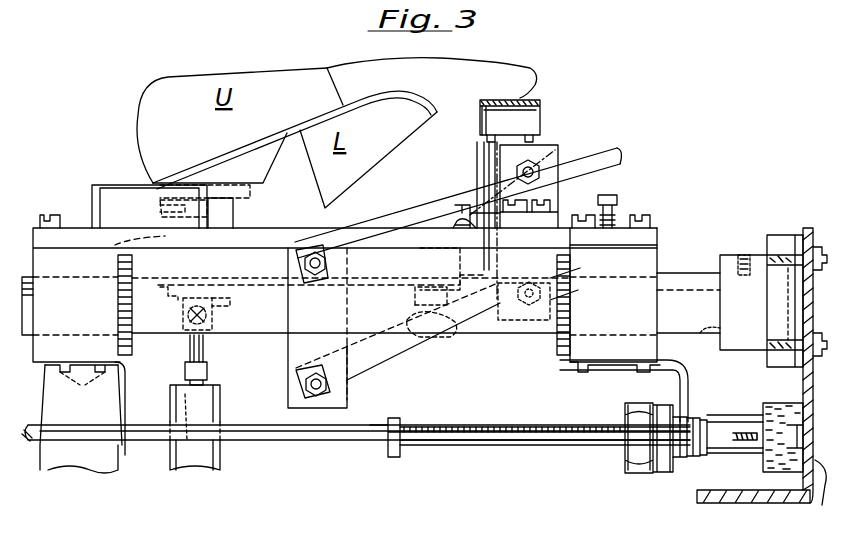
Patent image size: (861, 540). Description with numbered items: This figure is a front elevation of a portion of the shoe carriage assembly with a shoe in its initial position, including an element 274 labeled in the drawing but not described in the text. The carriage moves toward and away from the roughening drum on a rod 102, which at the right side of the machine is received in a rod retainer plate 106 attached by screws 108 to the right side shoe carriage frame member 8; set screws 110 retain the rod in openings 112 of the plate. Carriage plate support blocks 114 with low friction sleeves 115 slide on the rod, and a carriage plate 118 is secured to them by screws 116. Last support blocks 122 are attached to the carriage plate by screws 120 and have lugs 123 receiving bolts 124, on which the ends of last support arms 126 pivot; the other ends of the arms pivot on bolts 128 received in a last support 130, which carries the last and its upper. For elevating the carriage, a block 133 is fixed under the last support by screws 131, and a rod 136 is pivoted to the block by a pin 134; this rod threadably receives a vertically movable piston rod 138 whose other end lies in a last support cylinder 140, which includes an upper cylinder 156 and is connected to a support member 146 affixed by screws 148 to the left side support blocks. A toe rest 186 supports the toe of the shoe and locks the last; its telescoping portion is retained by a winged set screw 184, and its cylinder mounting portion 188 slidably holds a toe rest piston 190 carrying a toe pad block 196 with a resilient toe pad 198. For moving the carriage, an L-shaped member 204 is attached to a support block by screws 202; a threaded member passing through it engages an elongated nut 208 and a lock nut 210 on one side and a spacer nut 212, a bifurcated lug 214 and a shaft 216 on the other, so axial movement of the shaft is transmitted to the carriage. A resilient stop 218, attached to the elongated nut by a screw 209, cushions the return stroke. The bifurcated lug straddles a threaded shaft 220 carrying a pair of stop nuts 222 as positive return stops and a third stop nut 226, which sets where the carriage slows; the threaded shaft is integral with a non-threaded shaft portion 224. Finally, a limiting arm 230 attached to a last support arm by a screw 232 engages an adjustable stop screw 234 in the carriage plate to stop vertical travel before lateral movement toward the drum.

The right side shoe carriage frame member 8 is at (822, 505).
The rod 102 is at (700, 280).
The rod retainer plate 106 is at (779, 247).
The screws 108 is at (821, 243).
The set screws 110 is at (755, 258).
The openings 112 is at (705, 332).
The carriage plate support blocks 114 is at (40, 230).
The low friction sleeves 115 is at (133, 347).
The screws 116 is at (68, 228).
The carriage plate 118 is at (657, 237).
The screws 120 is at (528, 222).
The last support blocks 122 is at (582, 214).
The lugs 123 is at (540, 160).
The bolts 124 is at (533, 166).
The last support arms 126 is at (398, 218).
The bolts 128 is at (313, 258).
The last support 130 is at (233, 214).
The screws 131 is at (175, 302).
The block 133 is at (231, 302).
The pin 134 is at (212, 320).
The rod 136 is at (204, 347).
The piston rod 138 is at (185, 380).
The last support cylinder 140 is at (216, 410).
The support member 146 is at (82, 417).
The screws 148 is at (78, 390).
The upper cylinder 156 is at (184, 402).
The winged set screw 184 is at (412, 320).
The toe rest 186 is at (445, 185).
The cylinder mounting portion 188 is at (478, 156).
The toe rest piston 190 is at (480, 141).
The toe pad block 196 is at (538, 113).
The toe pad 198 is at (530, 105).
The screws 202 is at (580, 372).
The L-shaped member 204 is at (682, 395).
The elongated nut 208 is at (718, 416).
The screw 209 is at (752, 433).
The lock nut 210 is at (705, 452).
The spacer nut 212 is at (678, 460).
The bifurcated lug 214 is at (628, 470).
The shaft 216 is at (371, 431).
The stop 218 is at (770, 476).
The threaded shaft 220 is at (514, 432).
The stop nuts 222 is at (690, 458).
The non-threaded shaft portion 224 is at (300, 440).
The third stop nut 226 is at (400, 420).
The limiting arm 230 is at (619, 148).
The screw 232 is at (466, 234).
The adjustable stop screw 234 is at (617, 200).
The seat base 274 is at (148, 186).